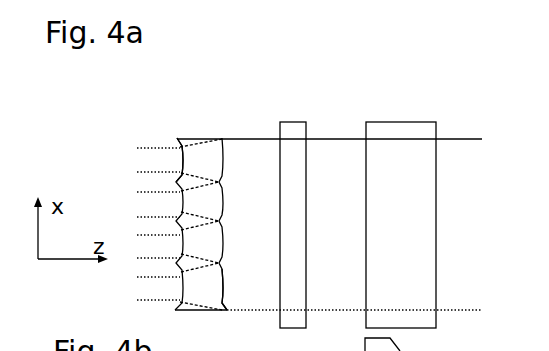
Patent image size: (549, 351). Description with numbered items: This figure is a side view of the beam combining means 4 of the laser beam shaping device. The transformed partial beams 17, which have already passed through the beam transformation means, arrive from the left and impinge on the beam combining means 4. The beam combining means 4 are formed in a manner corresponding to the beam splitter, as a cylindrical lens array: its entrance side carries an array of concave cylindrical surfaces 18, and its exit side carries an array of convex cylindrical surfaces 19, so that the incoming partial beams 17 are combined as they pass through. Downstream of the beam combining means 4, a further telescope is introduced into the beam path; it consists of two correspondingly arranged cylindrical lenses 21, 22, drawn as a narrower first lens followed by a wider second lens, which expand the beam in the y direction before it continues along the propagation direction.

The beam combining means 4 is at (203, 131).
The transformed partial beams 17 is at (158, 159).
The concave cylindrical surfaces 18 is at (177, 140).
The convex cylindrical surfaces 19 is at (224, 311).
The cylindrical lens 21 is at (293, 122).
The cylindrical lens 22 is at (388, 125).